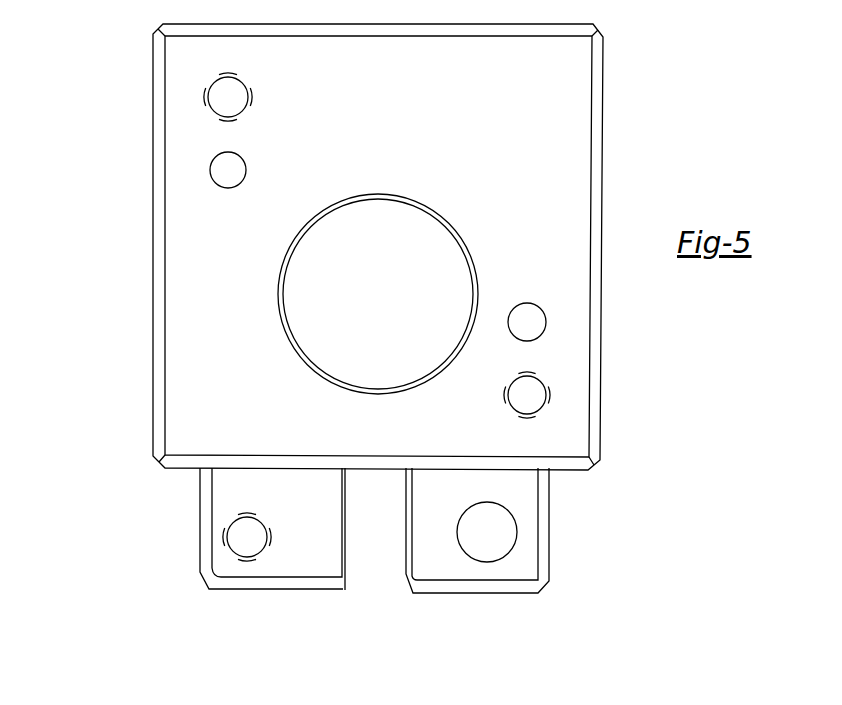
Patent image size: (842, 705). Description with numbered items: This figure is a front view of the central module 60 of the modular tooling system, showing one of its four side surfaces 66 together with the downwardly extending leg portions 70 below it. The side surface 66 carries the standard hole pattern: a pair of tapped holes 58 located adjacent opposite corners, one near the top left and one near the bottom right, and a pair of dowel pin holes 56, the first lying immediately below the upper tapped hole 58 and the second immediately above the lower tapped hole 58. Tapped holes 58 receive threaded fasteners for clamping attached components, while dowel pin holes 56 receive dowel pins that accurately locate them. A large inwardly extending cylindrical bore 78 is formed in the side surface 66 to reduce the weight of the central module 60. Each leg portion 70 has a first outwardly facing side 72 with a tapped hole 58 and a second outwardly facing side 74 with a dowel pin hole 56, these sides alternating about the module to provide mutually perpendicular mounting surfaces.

The central module 60 is at (98, 105).
The side surface 66 is at (565, 128).
The inwardly extending cylindrical bore 78 is at (391, 205).
The dowel pin hole 56 is at (546, 320).
The tapped hole 58 is at (547, 390).
The downwardly extending leg portion 70 is at (220, 490).
The first outwardly facing side 72 is at (518, 487).
The second outwardly facing side 74 is at (224, 570).